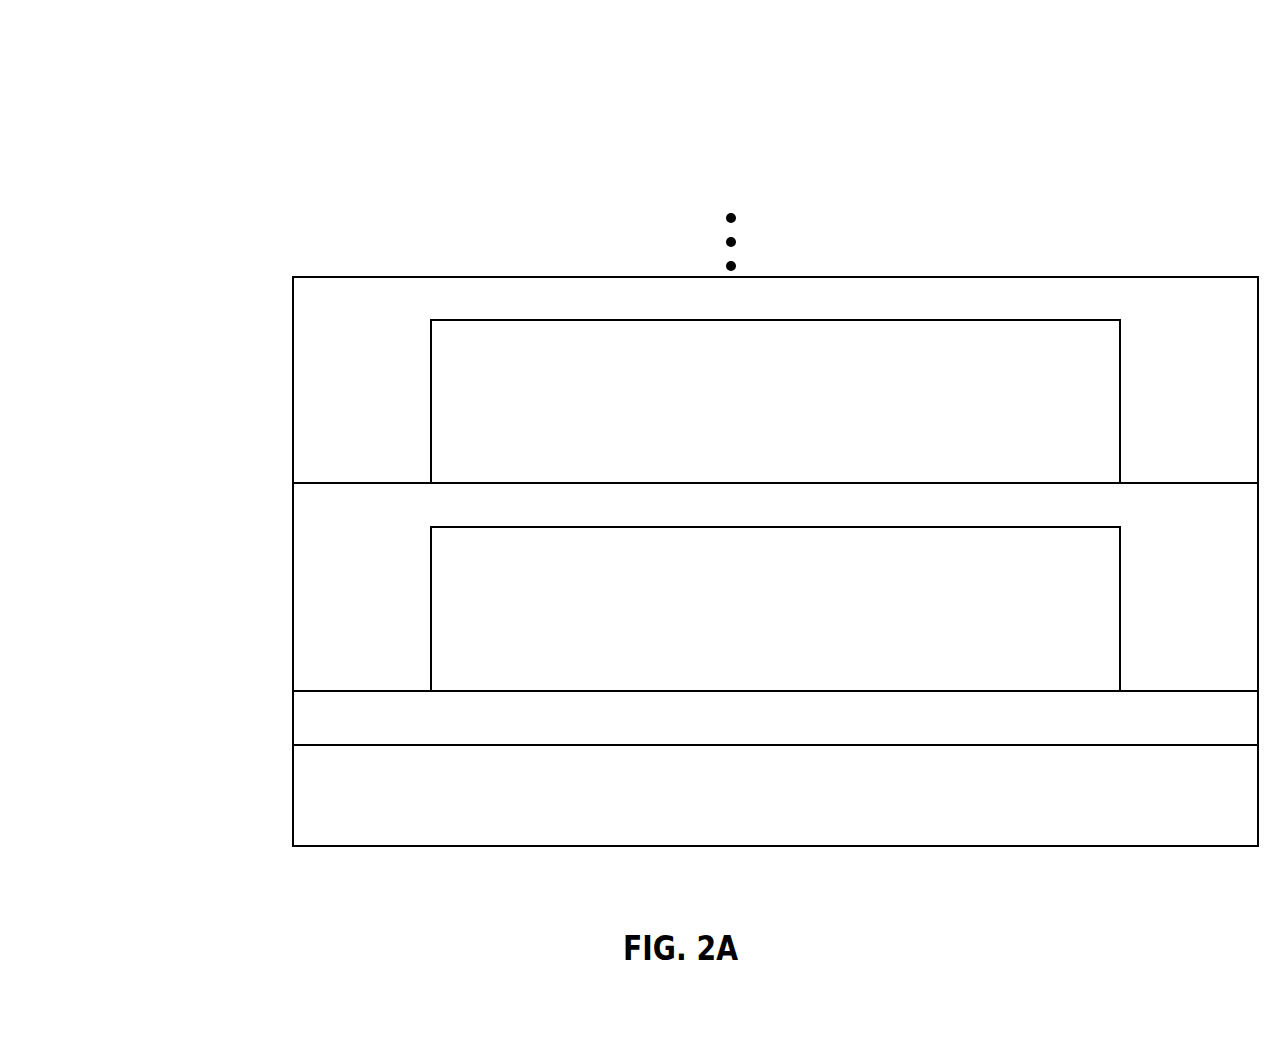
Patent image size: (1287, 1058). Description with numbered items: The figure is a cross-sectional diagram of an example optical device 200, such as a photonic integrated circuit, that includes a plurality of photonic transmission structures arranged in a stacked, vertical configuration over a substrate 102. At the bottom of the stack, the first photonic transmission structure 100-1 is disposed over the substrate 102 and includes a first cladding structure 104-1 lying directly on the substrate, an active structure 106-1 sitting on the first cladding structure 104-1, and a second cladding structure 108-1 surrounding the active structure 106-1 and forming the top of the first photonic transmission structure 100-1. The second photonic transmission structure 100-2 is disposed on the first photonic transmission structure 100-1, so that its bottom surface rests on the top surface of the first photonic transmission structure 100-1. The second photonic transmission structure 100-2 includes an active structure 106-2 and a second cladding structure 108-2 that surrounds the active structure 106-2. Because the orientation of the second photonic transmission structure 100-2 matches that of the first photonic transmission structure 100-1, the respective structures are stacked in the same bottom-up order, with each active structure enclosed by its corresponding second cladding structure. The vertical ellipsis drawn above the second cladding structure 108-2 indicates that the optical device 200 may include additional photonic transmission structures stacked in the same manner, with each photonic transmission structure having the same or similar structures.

The optical device 200 is at (198, 69).
The first photonic transmission structure 100-1 is at (282, 745).
The second photonic transmission structure 100-2 is at (282, 482).
The substrate 102 is at (847, 806).
The first cladding structure 104-1 is at (923, 729).
The active structure 106-1 is at (887, 620).
The active structure 106-2 is at (887, 413).
The second cladding structure 108-1 is at (940, 517).
The second cladding structure 108-2 is at (940, 309).